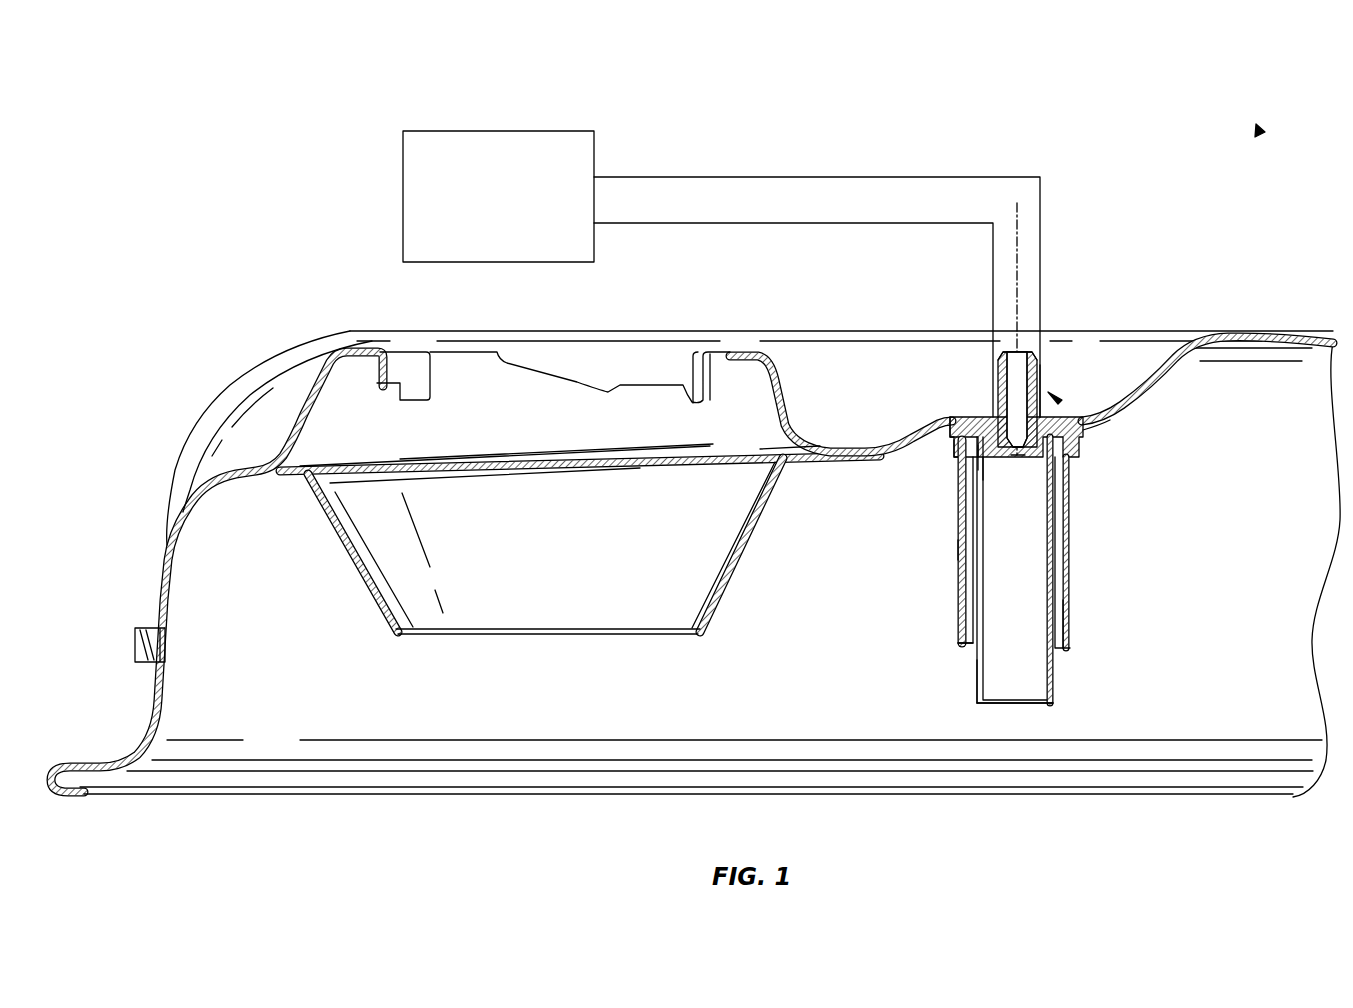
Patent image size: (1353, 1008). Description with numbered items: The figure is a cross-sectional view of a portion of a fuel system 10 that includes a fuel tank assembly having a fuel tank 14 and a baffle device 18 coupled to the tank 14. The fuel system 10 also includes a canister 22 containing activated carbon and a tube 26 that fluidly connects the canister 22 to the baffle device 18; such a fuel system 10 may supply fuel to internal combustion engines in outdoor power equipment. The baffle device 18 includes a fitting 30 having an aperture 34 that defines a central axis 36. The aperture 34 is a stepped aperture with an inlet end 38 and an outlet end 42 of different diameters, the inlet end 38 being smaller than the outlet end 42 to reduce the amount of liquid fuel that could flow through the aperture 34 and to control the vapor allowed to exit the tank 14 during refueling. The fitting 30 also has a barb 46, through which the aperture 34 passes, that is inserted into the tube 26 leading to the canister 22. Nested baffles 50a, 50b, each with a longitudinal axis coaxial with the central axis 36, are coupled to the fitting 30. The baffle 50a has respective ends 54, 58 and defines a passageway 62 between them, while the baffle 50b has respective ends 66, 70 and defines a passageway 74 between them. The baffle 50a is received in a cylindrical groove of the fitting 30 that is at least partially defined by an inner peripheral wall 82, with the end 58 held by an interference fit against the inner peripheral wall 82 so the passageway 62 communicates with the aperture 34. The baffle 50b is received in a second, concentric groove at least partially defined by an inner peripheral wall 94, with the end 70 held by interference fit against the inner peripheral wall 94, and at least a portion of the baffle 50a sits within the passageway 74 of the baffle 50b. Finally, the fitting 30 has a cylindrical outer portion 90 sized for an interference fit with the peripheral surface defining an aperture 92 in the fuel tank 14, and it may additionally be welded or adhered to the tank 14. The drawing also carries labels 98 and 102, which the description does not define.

The fuel system 10 is at (1258, 133).
The fuel tank 14 is at (277, 382).
The baffle device 18 is at (1060, 398).
The canister 22 is at (570, 130).
The tube 26 is at (868, 176).
The fitting 30 is at (1078, 440).
The aperture 34 is at (996, 373).
The central axis 36 is at (1020, 240).
The inlet end 38 is at (1012, 460).
The outlet end 42 is at (1010, 372).
The barb 46 is at (1040, 371).
The baffle 50a is at (1055, 572).
The baffle 50b is at (962, 607).
The end 54 is at (1050, 708).
The end 58 is at (1148, 392).
The passageway 62 is at (1020, 613).
The end 66 is at (963, 640).
The end 70 is at (967, 417).
The passageway 74 is at (972, 540).
The inner peripheral wall 82 is at (990, 468).
The cylindrical outer portion 90 is at (960, 445).
The aperture 92 is at (957, 417).
The inner peripheral wall 94 is at (985, 455).
The inner tube wall 98 is at (978, 677).
The tube opening 102 is at (1064, 628).